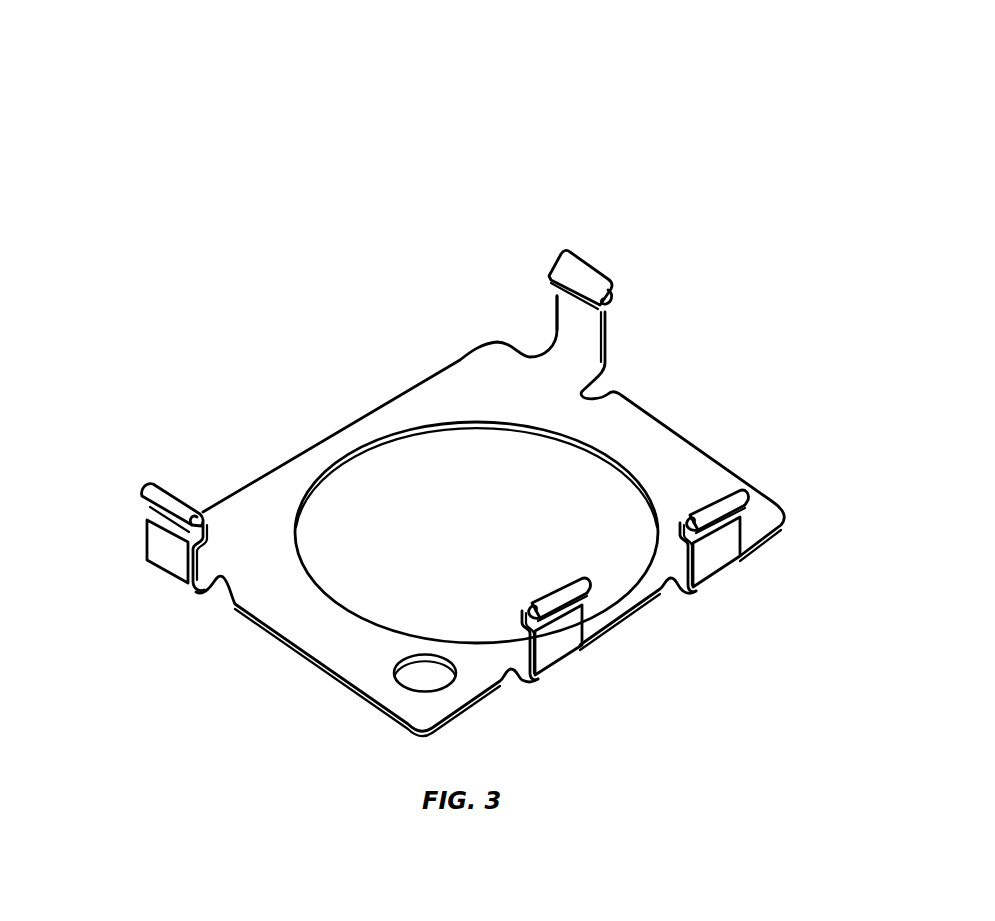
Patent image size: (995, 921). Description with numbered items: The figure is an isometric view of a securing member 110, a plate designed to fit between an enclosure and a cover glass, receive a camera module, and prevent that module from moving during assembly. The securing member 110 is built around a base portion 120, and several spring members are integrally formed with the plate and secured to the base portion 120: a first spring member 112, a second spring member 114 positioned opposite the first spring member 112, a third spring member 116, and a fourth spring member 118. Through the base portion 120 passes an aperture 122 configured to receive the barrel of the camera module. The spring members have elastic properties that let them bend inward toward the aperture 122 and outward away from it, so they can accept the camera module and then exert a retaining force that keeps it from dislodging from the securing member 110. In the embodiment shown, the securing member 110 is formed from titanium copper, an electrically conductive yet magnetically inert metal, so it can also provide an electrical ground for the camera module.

The securing member 110 is at (219, 107).
The first spring member 112 is at (577, 250).
The second spring member 114 is at (140, 490).
The third spring member 116 is at (743, 493).
The fourth spring member 118 is at (587, 593).
The base portion 120 is at (297, 657).
The aperture 122 is at (424, 428).